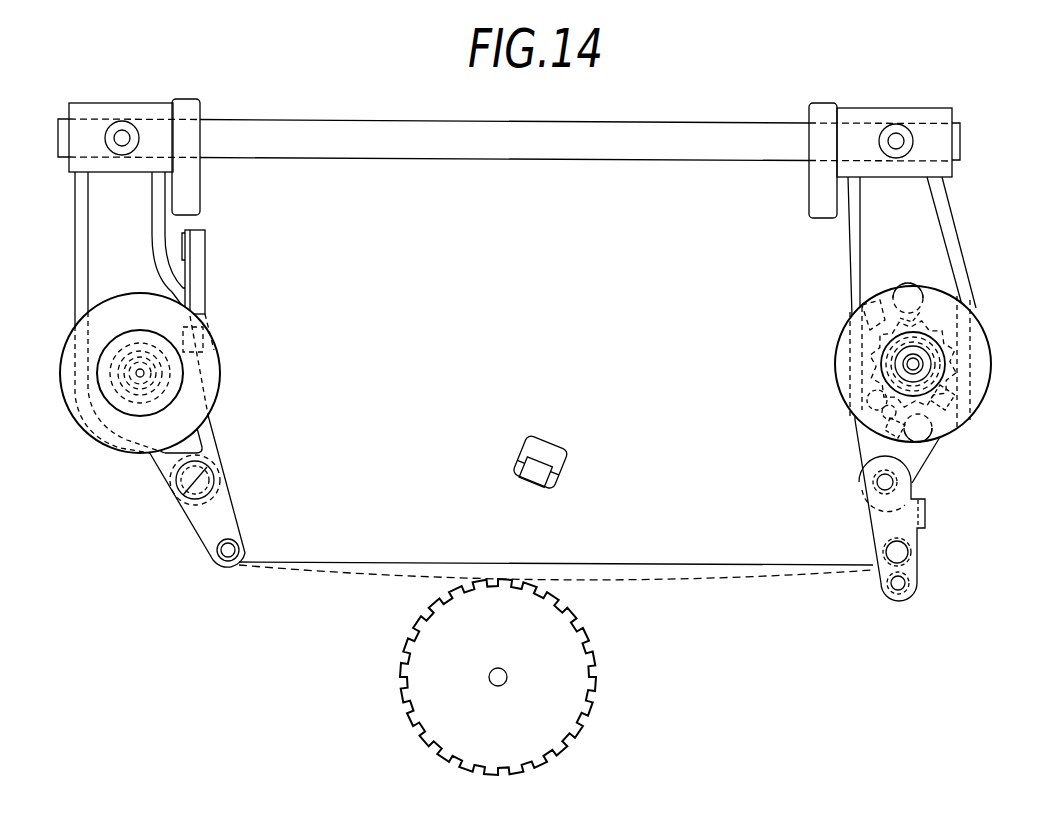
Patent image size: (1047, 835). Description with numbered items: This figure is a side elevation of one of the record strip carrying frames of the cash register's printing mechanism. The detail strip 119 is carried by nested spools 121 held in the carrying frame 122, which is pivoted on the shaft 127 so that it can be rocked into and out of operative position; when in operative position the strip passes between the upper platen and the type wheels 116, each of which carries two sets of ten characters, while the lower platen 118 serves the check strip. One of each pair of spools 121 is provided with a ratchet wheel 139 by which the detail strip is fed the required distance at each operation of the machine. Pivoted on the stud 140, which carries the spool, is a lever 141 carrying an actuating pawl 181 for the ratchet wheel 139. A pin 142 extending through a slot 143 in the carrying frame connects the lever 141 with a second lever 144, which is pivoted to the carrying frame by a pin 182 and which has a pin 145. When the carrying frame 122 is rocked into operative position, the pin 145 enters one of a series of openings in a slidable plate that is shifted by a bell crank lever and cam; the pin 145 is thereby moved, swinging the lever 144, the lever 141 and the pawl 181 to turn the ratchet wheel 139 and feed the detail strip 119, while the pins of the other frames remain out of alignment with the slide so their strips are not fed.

The type wheel 116 is at (592, 675).
The platen 118 is at (520, 478).
The detail strip 119 is at (390, 562).
The spool 121 is at (215, 363).
The frame 122 is at (93, 248).
The shaft 127 is at (480, 150).
The ratchet wheel 139 is at (923, 335).
The stud 140 is at (898, 365).
The lever 141 is at (887, 413).
The pin 142 is at (875, 399).
The slot 143 is at (896, 421).
The lever 144 is at (919, 564).
The pin 145 is at (894, 584).
The actuating pawl 181 is at (941, 396).
The pin 182 is at (876, 483).